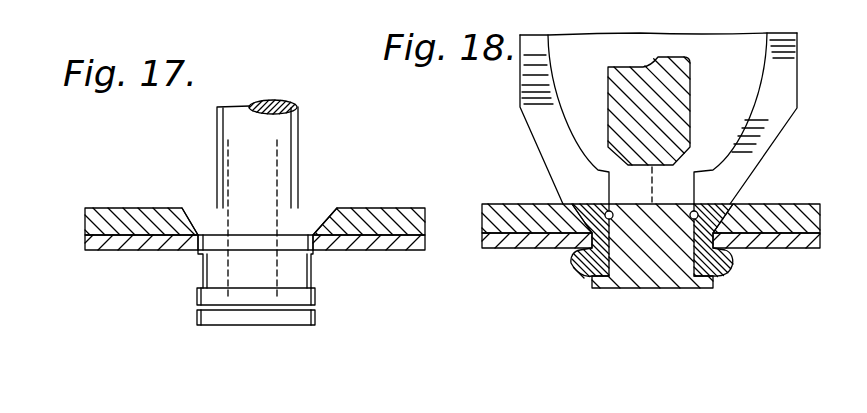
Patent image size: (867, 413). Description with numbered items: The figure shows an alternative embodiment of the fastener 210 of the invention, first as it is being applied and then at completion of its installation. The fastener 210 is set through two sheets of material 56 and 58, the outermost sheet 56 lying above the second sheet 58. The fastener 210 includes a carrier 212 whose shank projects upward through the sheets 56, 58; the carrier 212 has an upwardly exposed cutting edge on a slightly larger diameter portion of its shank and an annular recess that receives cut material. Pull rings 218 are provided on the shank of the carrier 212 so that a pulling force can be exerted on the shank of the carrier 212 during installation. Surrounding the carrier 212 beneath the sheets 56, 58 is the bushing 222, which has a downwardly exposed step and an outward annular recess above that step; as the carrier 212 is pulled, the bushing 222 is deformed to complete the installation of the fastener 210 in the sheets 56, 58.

In FIG. 17, the outermost sheet of material 56 is at (88, 208).
In FIG. 18, the outermost sheet of material 56 is at (508, 203).
In FIG. 17, the sheet of material 58 is at (88, 251).
In FIG. 18, the sheet of material 58 is at (505, 249).
In FIG. 17, the fastener embodiment 210 is at (237, 326).
In FIG. 17, the carrier 212 is at (303, 145).
In FIG. 18, the carrier 212 is at (698, 105).
In FIG. 17, the pull rings 218 is at (223, 165).
In FIG. 18, the pull rings 218 is at (608, 70).
In FIG. 17, the bushing 222 is at (200, 270).
In FIG. 18, the bushing 222 is at (735, 267).